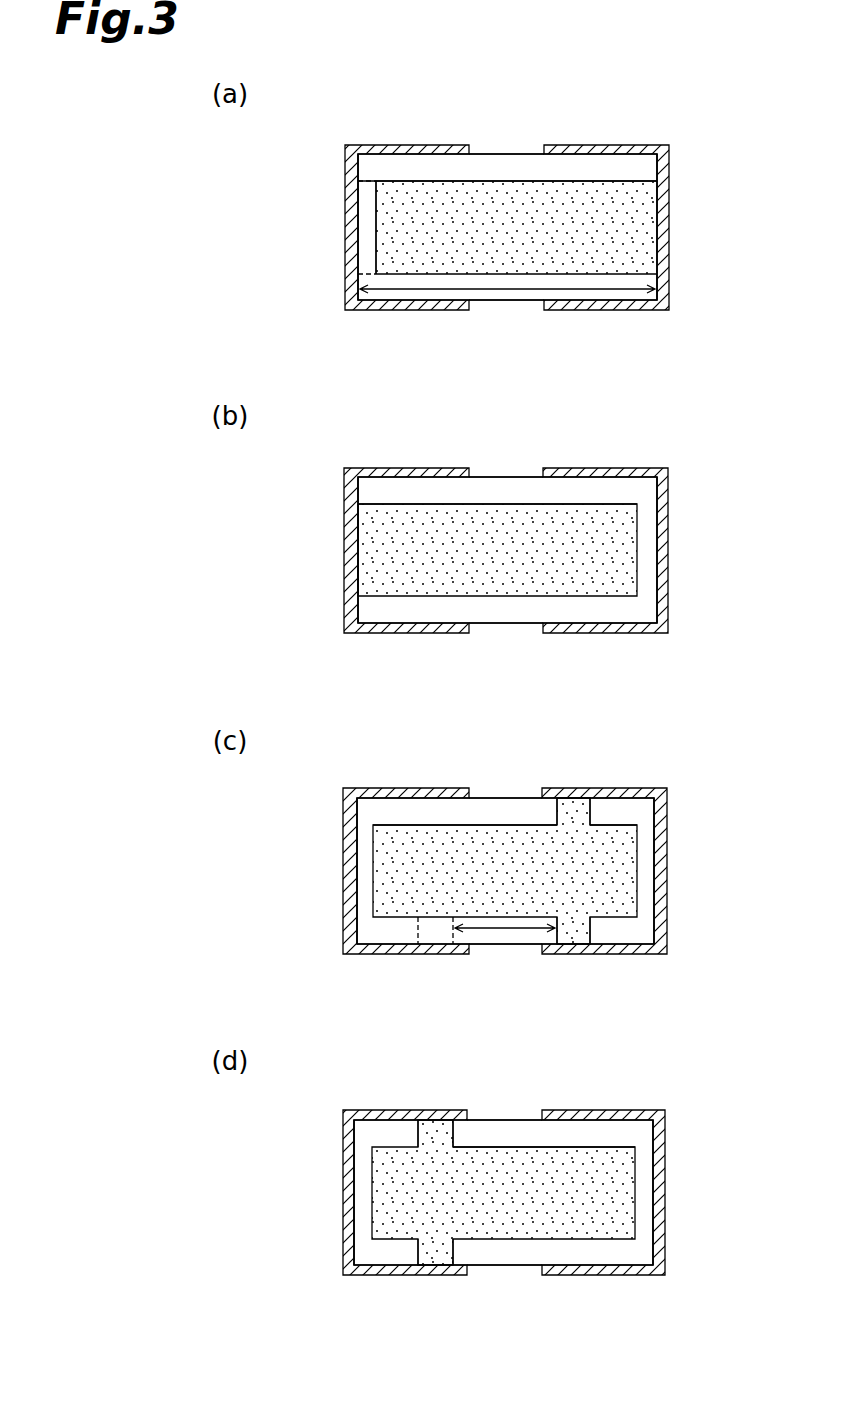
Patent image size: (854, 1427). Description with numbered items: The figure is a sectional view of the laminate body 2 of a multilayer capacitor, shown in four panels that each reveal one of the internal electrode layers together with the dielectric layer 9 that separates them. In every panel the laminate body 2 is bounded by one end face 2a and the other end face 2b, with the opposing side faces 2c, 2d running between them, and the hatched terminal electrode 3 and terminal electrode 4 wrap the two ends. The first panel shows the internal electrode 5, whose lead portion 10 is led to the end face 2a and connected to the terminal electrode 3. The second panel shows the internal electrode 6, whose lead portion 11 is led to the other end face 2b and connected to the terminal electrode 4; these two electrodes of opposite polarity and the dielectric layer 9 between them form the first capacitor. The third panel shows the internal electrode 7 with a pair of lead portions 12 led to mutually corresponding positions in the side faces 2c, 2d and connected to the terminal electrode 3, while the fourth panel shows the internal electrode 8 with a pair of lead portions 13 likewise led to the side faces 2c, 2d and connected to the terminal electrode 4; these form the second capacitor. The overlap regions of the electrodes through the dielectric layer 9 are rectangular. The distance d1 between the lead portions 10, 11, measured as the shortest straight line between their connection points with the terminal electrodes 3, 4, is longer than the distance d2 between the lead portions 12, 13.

The laminate body 2 is at (531, 147).
The end face 2a is at (661, 255).
The end face 2b is at (348, 255).
The side face 2c is at (495, 150).
The side face 2d is at (507, 302).
The terminal electrode 3 is at (663, 197).
The terminal electrode 4 is at (350, 200).
The internal electrode 5 is at (408, 195).
The internal electrode 6 is at (407, 522).
The internal electrode 7 is at (405, 840).
The internal electrode 8 is at (402, 1165).
The dielectric layer 9 is at (418, 168).
The lead portion 10 is at (650, 232).
The lead portion 11 is at (368, 553).
The lead portions 12 is at (585, 812).
The lead portions 13 is at (425, 1135).
The distance between lead portions 10, 11 d1 is at (492, 290).
The distance between lead portions 12, 13 d2 is at (493, 930).